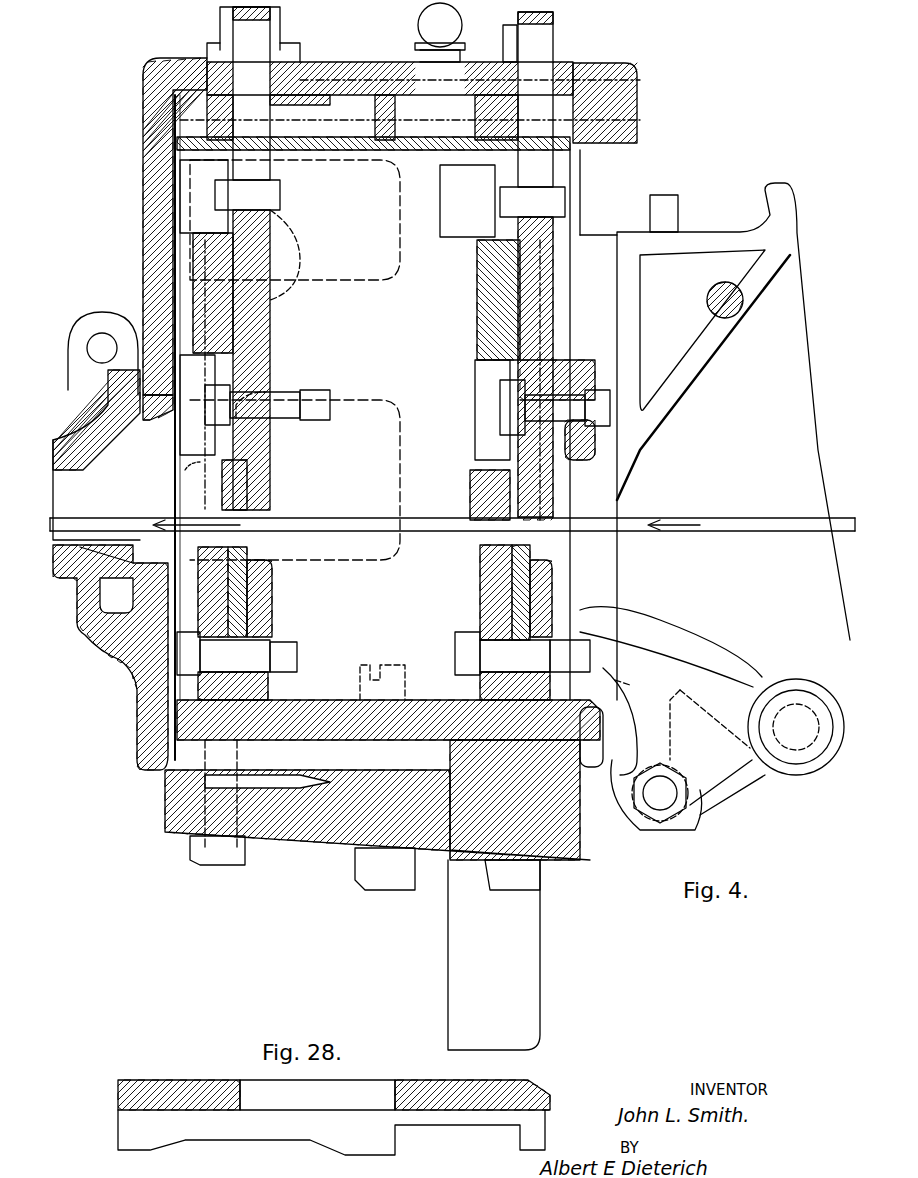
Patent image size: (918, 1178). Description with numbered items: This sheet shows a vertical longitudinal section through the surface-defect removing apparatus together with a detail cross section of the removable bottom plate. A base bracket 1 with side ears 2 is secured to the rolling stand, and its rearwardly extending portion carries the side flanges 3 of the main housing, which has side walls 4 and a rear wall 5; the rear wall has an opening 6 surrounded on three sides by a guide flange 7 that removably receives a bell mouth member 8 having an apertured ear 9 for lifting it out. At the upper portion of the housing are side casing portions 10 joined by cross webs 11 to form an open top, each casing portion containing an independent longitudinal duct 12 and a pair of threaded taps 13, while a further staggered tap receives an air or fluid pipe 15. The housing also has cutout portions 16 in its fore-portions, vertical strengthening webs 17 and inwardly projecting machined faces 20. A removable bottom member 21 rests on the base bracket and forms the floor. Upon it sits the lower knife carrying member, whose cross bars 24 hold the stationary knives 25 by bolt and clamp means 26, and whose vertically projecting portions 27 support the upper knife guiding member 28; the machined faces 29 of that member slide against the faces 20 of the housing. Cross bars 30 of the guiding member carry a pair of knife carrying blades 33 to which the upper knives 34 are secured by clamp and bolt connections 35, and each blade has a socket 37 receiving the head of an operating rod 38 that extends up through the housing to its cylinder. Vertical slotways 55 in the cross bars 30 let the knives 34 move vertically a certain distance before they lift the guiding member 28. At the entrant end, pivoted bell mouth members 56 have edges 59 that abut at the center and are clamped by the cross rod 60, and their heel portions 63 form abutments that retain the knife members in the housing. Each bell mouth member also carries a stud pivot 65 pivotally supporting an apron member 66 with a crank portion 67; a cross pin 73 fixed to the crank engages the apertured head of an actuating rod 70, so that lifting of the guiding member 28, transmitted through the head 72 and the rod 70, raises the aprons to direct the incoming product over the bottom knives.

In FIG. 4, the base bracket 1 is at (168, 806).
In FIG. 4, the side ears 2 is at (460, 968).
In FIG. 4, the side flanges 3 is at (352, 700).
In FIG. 4, the side walls 4 is at (195, 150).
In FIG. 4, the rear wall 5 is at (155, 200).
In FIG. 4, the opening 6 is at (168, 410).
In FIG. 4, the guide flange 7 is at (85, 605).
In FIG. 4, the bell mouth member 8 is at (118, 388).
In FIG. 4, the apertured ear 9 is at (95, 322).
In FIG. 4, the side casing portions 10 is at (345, 70).
In FIG. 4, the cross webs 11 is at (372, 70).
In FIG. 4, the longitudinal duct 12 is at (165, 130).
In FIG. 4, the threaded taps 13 is at (275, 62).
In FIG. 4, the air or fluid pipe 15 is at (432, 15).
In FIG. 4, the cutout portions 16 is at (488, 318).
In FIG. 4, the vertical strengthening webs 17 is at (447, 150).
In FIG. 4, the inwardly projecting machined faces 20 is at (185, 215).
In FIG. 4, the removable bottom member 21 is at (275, 710).
In FIG. 28, the removable bottom member 21 is at (185, 1082).
In FIG. 4, the cross bars 24 is at (200, 590).
In FIG. 4, the knives 25 is at (252, 575).
In FIG. 4, the bolt and clamp means 26 is at (258, 640).
In FIG. 4, the vertically projecting portions 27 is at (180, 475).
In FIG. 4, the upper knife guiding member 28 is at (352, 246).
In FIG. 4, the projections and machined faces 29 is at (180, 285).
In FIG. 4, the cross bars 30 is at (218, 292).
In FIG. 4, the knife carrying blades 33 is at (228, 320).
In FIG. 4, the upper knives 34 is at (262, 506).
In FIG. 4, the clamp and bolt connections 35 is at (302, 395).
In FIG. 4, the cutout portion or socket 37 is at (268, 222).
In FIG. 4, the operating rod 38 is at (262, 30).
In FIG. 4, the vertical slotways 55 is at (230, 345).
In FIG. 4, the bell mouth members 56 is at (805, 412).
In FIG. 4, the edges 59 is at (722, 240).
In FIG. 4, the cross or clamp rod 60 is at (712, 315).
In FIG. 4, the heel portion 63 is at (668, 232).
In FIG. 4, the stud pivot 65 is at (805, 690).
In FIG. 4, the apron member 66 is at (733, 643).
In FIG. 4, the crank portion 67 is at (700, 792).
In FIG. 4, the actuating rod 70 is at (672, 210).
In FIG. 4, the head 72 is at (615, 808).
In FIG. 4, the cross pin 73 is at (665, 812).